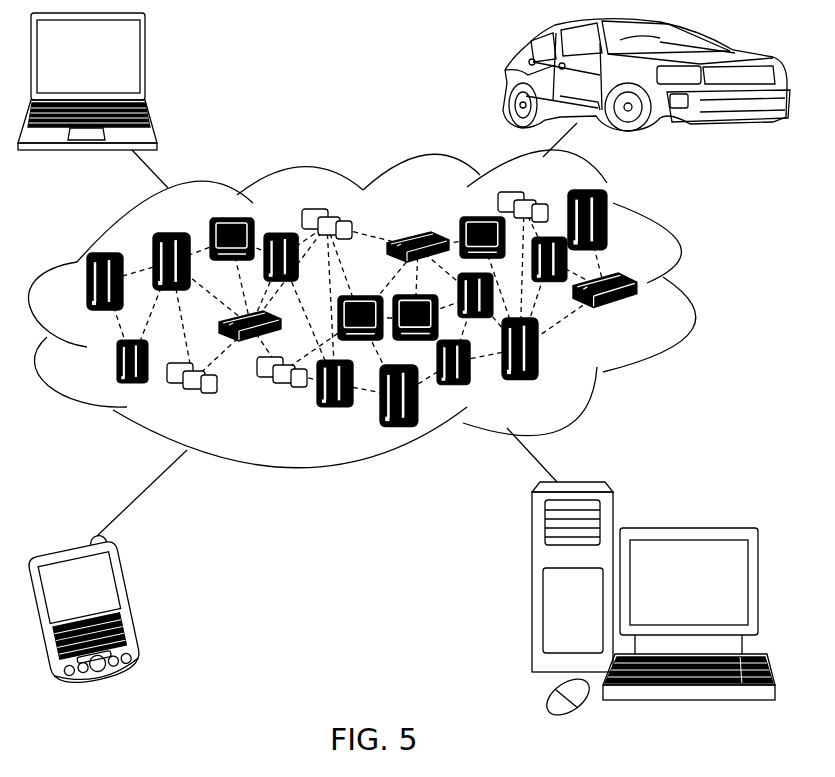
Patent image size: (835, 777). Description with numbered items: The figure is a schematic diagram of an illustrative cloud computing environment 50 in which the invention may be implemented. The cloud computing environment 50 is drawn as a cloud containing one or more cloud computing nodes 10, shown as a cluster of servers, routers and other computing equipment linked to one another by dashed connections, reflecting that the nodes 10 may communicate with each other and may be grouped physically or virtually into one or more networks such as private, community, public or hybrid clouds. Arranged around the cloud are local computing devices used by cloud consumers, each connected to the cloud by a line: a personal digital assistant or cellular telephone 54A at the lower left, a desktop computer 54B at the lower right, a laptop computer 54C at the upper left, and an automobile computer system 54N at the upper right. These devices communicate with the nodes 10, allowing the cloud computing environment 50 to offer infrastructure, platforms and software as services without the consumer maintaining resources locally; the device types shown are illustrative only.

The cloud computing node 10 is at (642, 315).
The cloud computing environment 50 is at (692, 290).
The personal digital assistant or cellular telephone 54A is at (137, 607).
The desktop computer 54B is at (688, 528).
The laptop computer 54C is at (145, 60).
The automobile computer system 54N is at (503, 80).